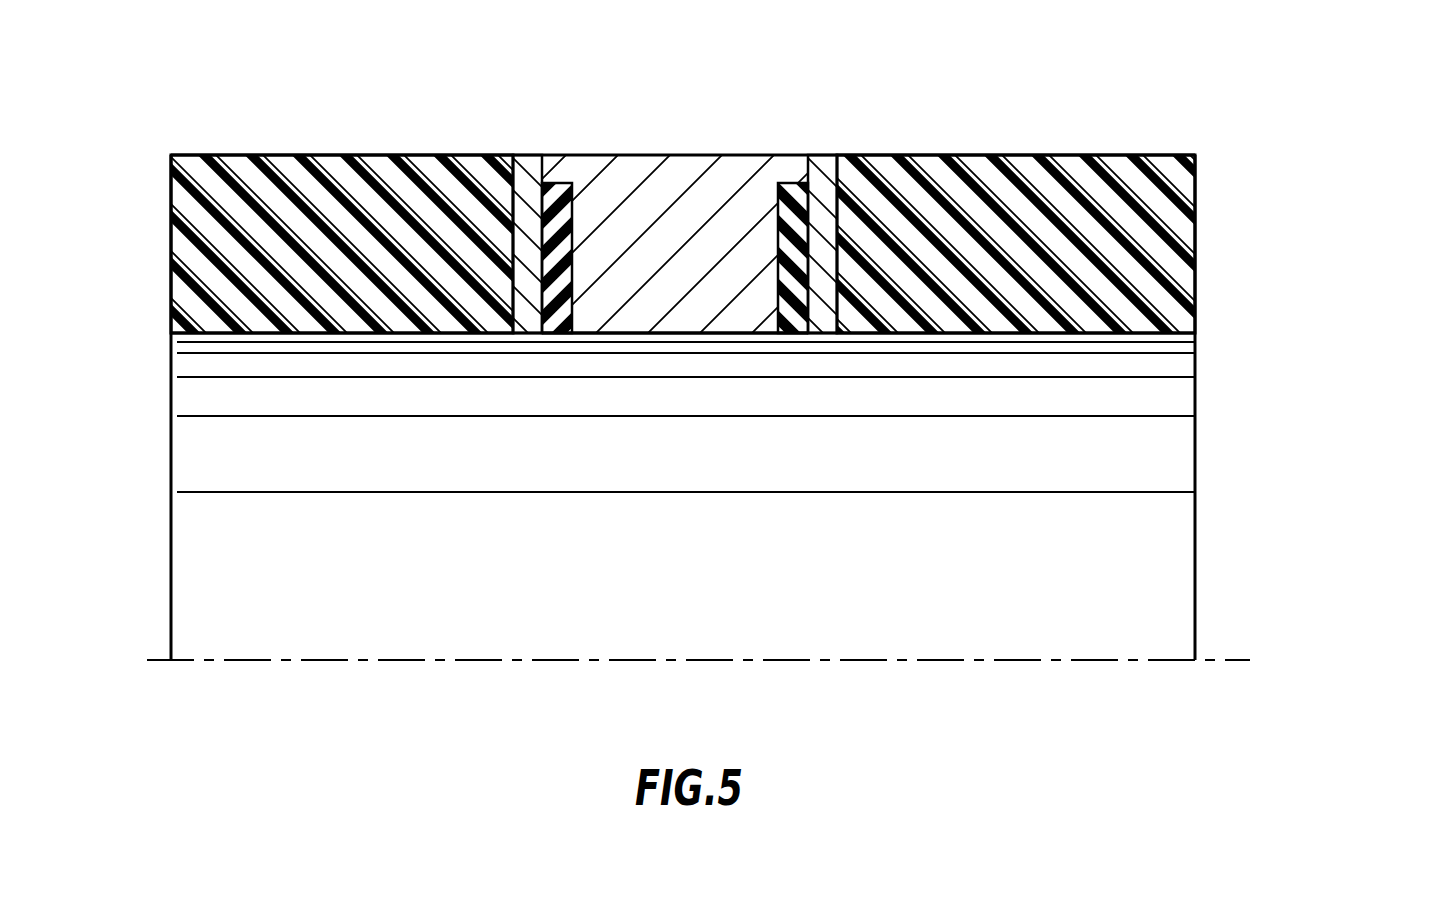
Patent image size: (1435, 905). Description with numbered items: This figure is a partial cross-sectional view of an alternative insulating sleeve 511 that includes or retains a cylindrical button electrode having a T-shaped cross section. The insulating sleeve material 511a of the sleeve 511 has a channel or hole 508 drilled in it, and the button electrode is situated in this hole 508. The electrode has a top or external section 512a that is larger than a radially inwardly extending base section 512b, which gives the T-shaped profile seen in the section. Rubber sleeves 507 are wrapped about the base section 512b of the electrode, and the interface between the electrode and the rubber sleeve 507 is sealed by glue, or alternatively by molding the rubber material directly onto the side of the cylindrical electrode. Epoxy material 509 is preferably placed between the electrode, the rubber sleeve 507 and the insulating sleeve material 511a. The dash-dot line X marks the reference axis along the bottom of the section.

The insulating sleeve 511 is at (1290, 243).
The insulating sleeve material 511a is at (196, 177).
The epoxy material 509 is at (532, 155).
The channel or hole 508 is at (810, 212).
The rubber sleeve 507 is at (790, 335).
The top or external section 512a is at (678, 173).
The base section 512b is at (692, 323).
The reference axis X is at (1228, 660).